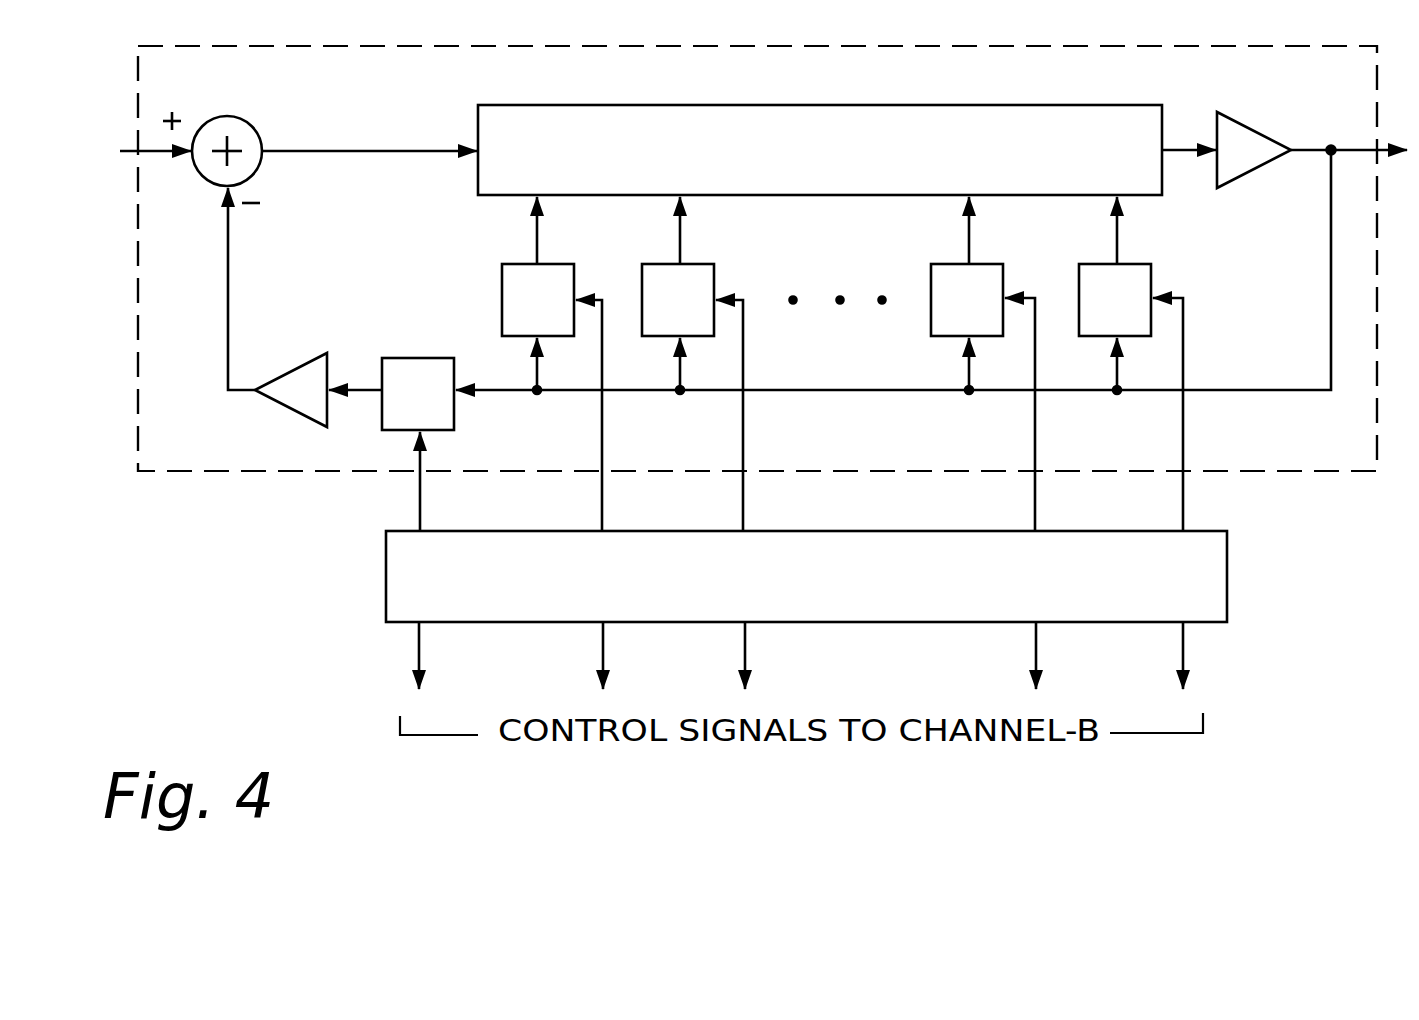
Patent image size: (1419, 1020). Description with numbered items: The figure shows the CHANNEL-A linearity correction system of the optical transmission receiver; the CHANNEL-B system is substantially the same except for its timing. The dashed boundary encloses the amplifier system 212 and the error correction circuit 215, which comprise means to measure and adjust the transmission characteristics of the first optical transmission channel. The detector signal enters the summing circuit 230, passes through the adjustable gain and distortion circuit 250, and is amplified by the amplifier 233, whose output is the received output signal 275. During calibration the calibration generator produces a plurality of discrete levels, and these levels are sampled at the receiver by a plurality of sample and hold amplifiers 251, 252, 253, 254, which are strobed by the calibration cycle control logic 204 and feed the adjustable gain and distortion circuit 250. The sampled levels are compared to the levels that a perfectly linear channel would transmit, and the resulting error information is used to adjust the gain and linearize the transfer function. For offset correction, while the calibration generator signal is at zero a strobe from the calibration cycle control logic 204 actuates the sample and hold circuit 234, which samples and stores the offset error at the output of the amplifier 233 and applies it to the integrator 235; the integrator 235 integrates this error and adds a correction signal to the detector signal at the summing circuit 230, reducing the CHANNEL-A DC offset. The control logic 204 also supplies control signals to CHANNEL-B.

The calibration cycle control logic 204 is at (377, 563).
The amplifier system 212 is at (218, 477).
The error correction circuit 215 is at (757, 258).
The summing circuit 230 is at (256, 128).
The amplifier 233 is at (1253, 130).
The sample and hold circuit 234 is at (405, 358).
The integrator 235 is at (305, 364).
The adjustable gain and distortion circuit 250 is at (490, 200).
The sample and hold amplifier 251 is at (558, 263).
The sample and hold amplifier 252 is at (700, 263).
The sample and hold amplifier 253 is at (985, 262).
The sample and hold amplifier 254 is at (1135, 262).
The received output signal 275 is at (1322, 240).